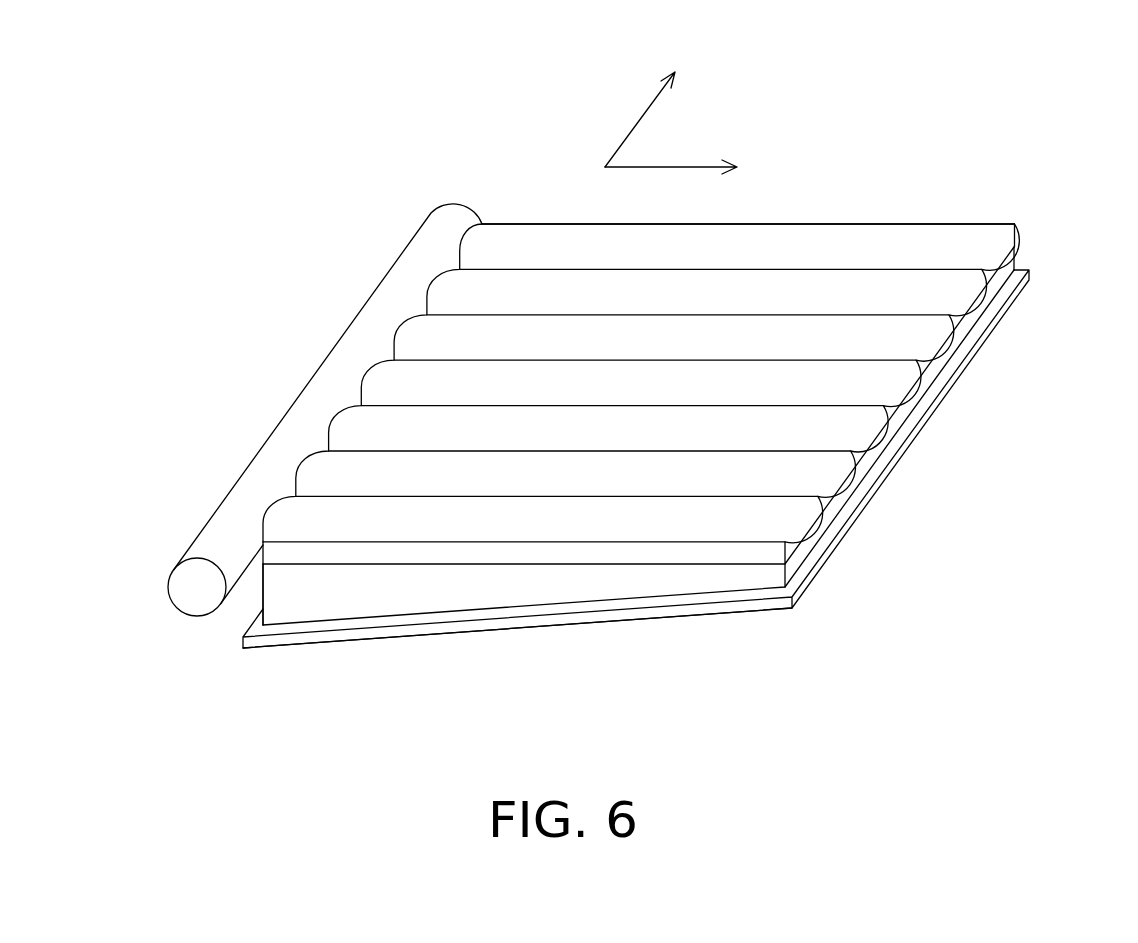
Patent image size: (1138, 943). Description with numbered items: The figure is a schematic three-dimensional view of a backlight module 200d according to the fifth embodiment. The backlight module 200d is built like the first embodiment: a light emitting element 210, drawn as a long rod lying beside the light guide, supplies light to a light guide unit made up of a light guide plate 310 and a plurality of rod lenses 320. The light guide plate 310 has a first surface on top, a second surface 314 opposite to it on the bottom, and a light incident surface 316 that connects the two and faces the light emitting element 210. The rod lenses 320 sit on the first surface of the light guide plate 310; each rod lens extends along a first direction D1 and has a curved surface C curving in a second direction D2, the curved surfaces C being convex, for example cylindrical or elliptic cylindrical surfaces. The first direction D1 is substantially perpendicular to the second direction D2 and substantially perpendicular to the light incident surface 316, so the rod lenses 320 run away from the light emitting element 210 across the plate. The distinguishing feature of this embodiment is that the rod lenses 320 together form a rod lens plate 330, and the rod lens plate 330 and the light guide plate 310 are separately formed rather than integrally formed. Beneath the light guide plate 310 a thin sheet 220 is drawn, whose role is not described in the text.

The backlight module 200d is at (1030, 728).
The light emitting element 210 is at (193, 598).
The reflective sheet 220 is at (373, 635).
The light guide plate 310 is at (604, 483).
The second surface 314 is at (823, 565).
The light incident surface 316 is at (249, 601).
The rod lenses 320 is at (828, 470).
The rod lens plate 330 is at (647, 436).
The curved surface C is at (778, 238).
The first direction D1 is at (688, 171).
The second direction D2 is at (649, 100).